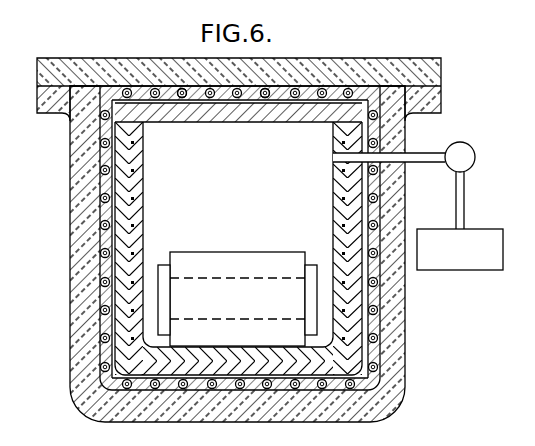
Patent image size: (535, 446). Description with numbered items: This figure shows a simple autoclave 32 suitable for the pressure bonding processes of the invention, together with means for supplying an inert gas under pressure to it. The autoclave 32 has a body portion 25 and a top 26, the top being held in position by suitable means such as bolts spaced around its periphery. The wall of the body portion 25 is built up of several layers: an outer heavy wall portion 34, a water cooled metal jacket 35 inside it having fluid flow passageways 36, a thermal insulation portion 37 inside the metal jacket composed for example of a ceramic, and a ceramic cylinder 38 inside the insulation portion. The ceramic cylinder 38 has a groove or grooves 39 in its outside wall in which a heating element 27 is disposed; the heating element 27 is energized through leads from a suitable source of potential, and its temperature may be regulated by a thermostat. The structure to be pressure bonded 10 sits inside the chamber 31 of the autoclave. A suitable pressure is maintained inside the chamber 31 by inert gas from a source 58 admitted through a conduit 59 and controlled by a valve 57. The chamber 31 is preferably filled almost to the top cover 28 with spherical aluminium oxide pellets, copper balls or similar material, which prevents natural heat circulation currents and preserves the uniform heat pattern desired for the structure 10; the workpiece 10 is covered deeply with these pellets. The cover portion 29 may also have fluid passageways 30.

The structure to be pressure bonded 10 is at (276, 252).
The body portion 25 is at (80, 224).
The top 26 is at (139, 59).
The heating element 27 is at (333, 168).
The top cover 28 is at (310, 112).
The cover portion 29 is at (245, 100).
The fluid passageways 30 is at (181, 99).
The chamber 31 is at (217, 220).
The autoclave 32 is at (80, 178).
The outer heavy wall portion 34 is at (72, 140).
The water cooled metal jacket 35 is at (100, 325).
The fluid flow passageways 36 is at (100, 287).
The thermal insulation portion 37 is at (123, 236).
The ceramic cylinder 38 is at (138, 160).
The grooves 39 is at (140, 200).
The valve 57 is at (462, 142).
The source 58 is at (475, 229).
The conduit 59 is at (422, 152).